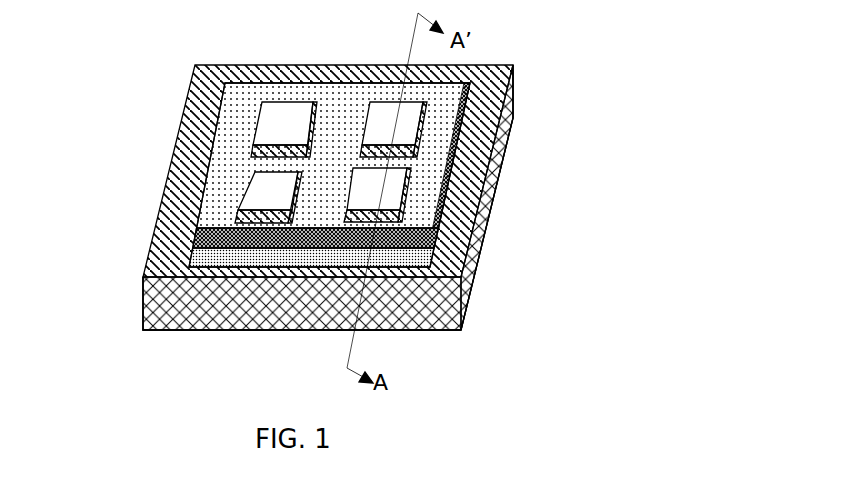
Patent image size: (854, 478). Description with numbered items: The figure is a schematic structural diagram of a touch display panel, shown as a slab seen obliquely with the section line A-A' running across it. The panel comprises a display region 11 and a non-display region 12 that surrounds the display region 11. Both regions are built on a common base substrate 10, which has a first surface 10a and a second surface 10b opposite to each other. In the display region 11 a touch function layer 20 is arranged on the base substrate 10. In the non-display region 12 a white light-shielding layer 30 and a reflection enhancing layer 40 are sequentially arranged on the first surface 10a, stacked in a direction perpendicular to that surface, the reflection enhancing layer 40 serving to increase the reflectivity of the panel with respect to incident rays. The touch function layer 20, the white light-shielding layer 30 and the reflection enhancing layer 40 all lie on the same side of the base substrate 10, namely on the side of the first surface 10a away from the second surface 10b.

The base substrate 10 is at (197, 303).
The first surface 10a is at (445, 277).
The second surface 10b is at (392, 331).
The display region 11 is at (280, 123).
The non-display region 12 is at (250, 103).
The touch function layer 20 is at (382, 217).
The white light-shielding layer 30 is at (218, 260).
The reflection enhancing layer 40 is at (218, 240).